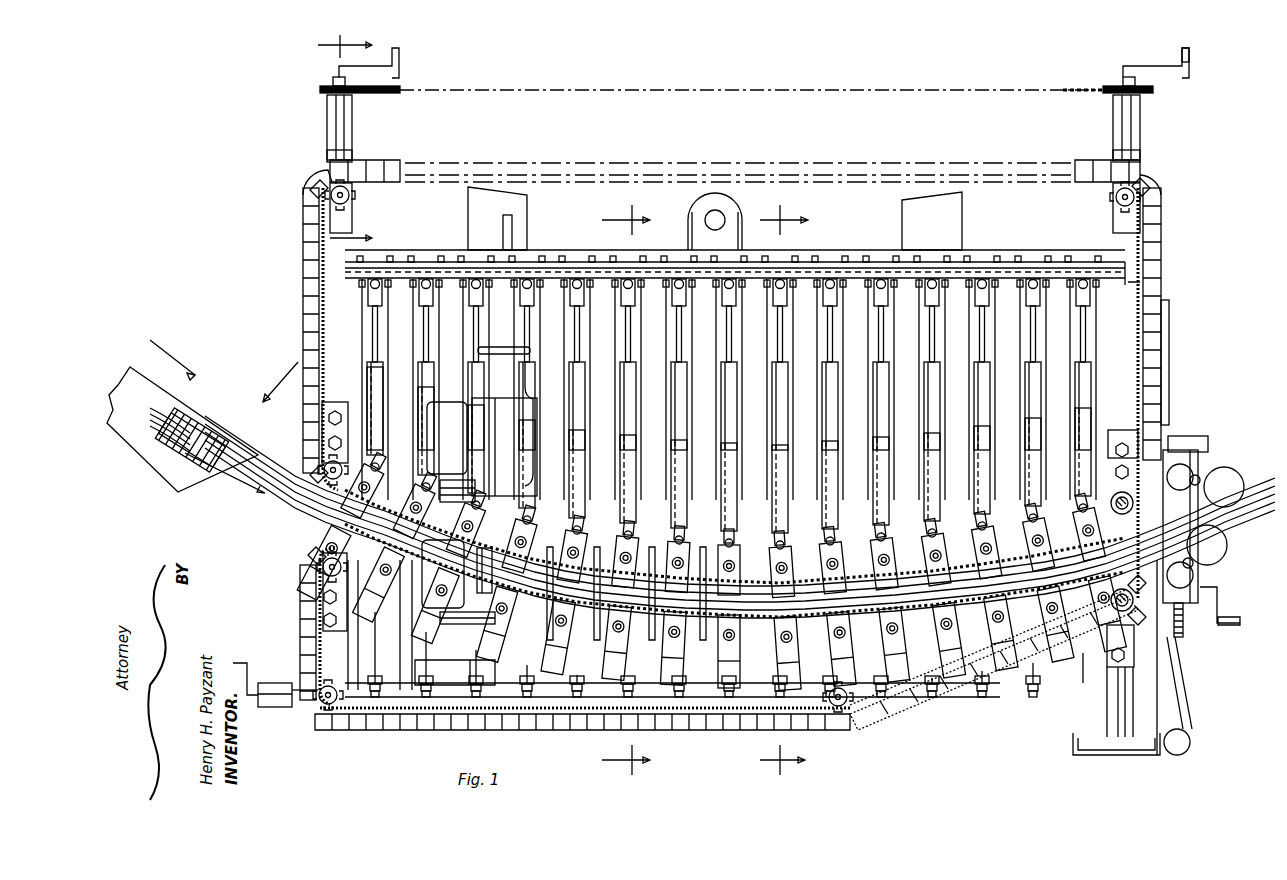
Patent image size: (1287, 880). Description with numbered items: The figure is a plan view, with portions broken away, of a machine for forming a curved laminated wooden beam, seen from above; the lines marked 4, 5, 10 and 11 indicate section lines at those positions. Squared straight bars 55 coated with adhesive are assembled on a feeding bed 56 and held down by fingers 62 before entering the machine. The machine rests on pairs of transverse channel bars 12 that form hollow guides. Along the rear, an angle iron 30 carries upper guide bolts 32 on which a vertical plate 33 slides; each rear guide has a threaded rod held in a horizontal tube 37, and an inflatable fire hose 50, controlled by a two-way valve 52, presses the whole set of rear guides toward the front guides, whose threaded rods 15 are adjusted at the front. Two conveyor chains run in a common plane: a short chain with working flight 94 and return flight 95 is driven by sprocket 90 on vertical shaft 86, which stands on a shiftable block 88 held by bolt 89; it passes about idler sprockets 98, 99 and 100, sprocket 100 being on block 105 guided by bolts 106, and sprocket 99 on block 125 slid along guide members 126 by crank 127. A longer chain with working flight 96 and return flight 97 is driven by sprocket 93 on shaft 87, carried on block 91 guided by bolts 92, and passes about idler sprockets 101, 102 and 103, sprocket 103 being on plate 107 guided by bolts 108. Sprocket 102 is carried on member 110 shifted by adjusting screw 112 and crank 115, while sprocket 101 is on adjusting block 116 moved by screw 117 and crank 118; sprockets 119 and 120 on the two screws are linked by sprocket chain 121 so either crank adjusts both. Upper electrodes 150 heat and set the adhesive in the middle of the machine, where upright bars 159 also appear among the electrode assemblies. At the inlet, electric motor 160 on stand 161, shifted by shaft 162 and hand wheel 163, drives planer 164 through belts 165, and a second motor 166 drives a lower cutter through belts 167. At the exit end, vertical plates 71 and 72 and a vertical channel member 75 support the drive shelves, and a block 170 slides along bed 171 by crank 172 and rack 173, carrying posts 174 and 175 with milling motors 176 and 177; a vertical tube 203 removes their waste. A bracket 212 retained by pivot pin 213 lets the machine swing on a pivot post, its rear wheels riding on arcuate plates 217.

The section line 4 is at (792, 490).
The section line 5 is at (224, 370).
The supporting structure 10 is at (638, 490).
The heavy flat plate 11 is at (358, 141).
The channel bars 12 is at (330, 300).
The threaded rods 15 is at (620, 698).
The angle iron 30 is at (1011, 252).
The upper guide bolts 32 is at (446, 260).
The vertical plate 33 is at (840, 279).
The horizontal tube 37 is at (711, 476).
The fire hose 50 is at (977, 264).
The two-way valve 52 is at (1158, 280).
The bars 55 is at (162, 413).
The bed 56 is at (140, 447).
The fingers 62 is at (218, 442).
The vertical plate 71 is at (1170, 340).
The vertical plate 72 is at (1090, 336).
The vertical channel member 75 is at (1110, 753).
The vertical shaft 86 is at (1132, 589).
The vertical shaft 87 is at (1138, 504).
The longitudinally shiftable block 88 is at (1126, 640).
The bolt 89 is at (1127, 658).
The sprocket 90 is at (1092, 604).
The block 91 is at (1136, 435).
The bolts 92 is at (1115, 472).
The shiftable sprocket 93 is at (1105, 498).
The working flight 94 is at (804, 638).
The return flight 95 is at (541, 731).
The working flight 96 is at (800, 572).
The return flight 97 is at (1090, 188).
The return flight idler sprocket 98 is at (840, 686).
The adjustably mounted return flight idler sprocket 99 is at (324, 703).
The idler working flight sprocket 100 is at (324, 570).
The idler return sprocket 101 is at (1150, 185).
The idler return flight sprocket 102 is at (354, 192).
The idler working flight sprocket 103 is at (323, 469).
The block 105 is at (327, 622).
The bolts 106 is at (327, 598).
The plate 107 is at (320, 403).
The bolts 108 is at (329, 443).
The member 110 is at (327, 156).
The adjusting screw 112 is at (344, 79).
The crank 115 is at (398, 59).
The adjusting block 116 is at (1112, 228).
The screw 117 is at (1140, 83).
The crank 118 is at (1190, 60).
The sprocket 119 is at (358, 92).
The sprocket 120 is at (1153, 95).
The sprocket chain 121 is at (1072, 88).
The block 125 is at (292, 704).
The guide members 126 is at (275, 682).
The crank 127 is at (232, 663).
The upper electrodes 150 is at (585, 594).
The guide bars 159 is at (676, 612).
The electric motor 160 is at (448, 433).
The stand 161 is at (510, 440).
The shaft 162 is at (507, 225).
The hand wheel 163 is at (525, 348).
The planer 164 is at (484, 545).
The belts 165 is at (462, 495).
The second motor 166 is at (446, 570).
The belts 167 is at (470, 638).
The block 170 is at (1192, 457).
The bed 171 is at (1203, 436).
The crank 172 is at (1238, 610).
The rack 173 is at (1184, 642).
The post 174 is at (1194, 574).
The post 175 is at (1196, 470).
The motor 176 is at (1224, 546).
The motor 177 is at (1230, 484).
The vertical tube 203 is at (1190, 738).
The bracket 212 is at (740, 240).
The pivot pin 213 is at (718, 218).
The arcuate plates 217 is at (526, 213).